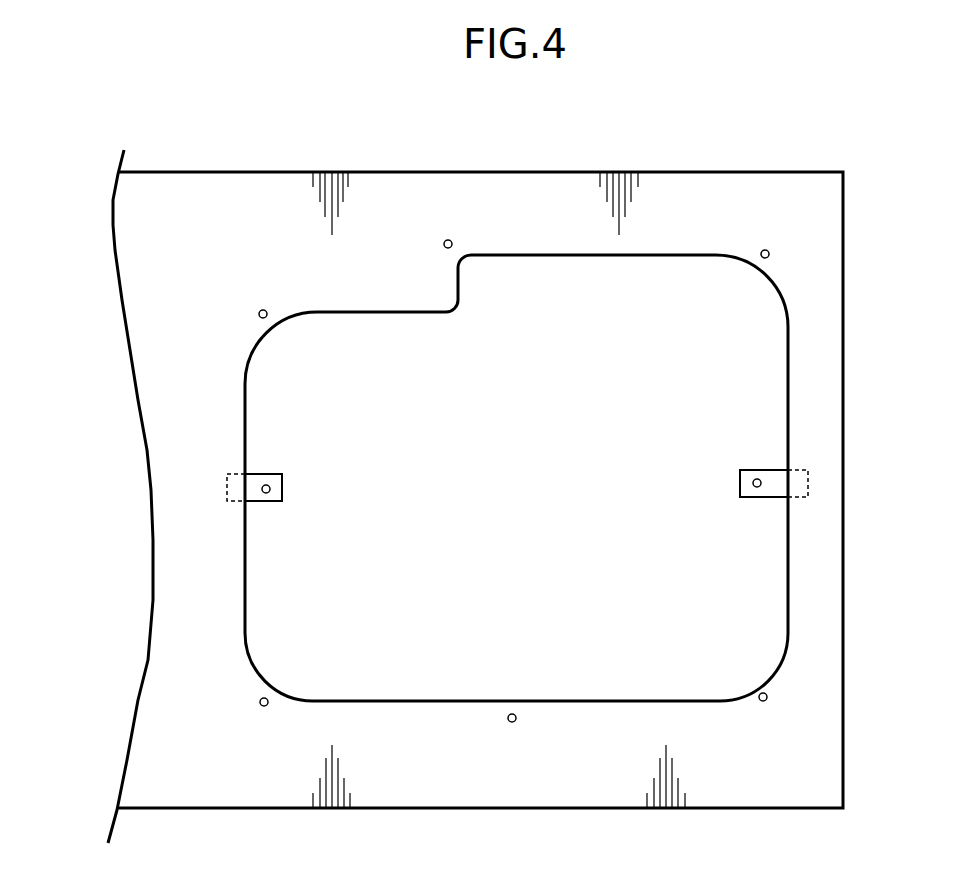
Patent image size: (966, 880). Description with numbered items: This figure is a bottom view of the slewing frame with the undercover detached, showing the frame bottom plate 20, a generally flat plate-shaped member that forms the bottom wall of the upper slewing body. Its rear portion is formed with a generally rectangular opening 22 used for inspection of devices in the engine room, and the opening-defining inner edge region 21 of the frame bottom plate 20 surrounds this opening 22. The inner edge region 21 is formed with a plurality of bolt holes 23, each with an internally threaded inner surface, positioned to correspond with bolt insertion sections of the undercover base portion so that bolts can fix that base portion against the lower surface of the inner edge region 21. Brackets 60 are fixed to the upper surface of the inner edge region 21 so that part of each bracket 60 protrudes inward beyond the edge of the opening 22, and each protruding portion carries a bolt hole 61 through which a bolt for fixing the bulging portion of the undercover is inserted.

The frame bottom plate 20 is at (180, 200).
The inner edge region 21 is at (802, 404).
The opening 22 is at (786, 368).
The bolt hole 23 is at (258, 315).
The bracket 60 is at (262, 474).
The bolt hole 61 is at (266, 494).